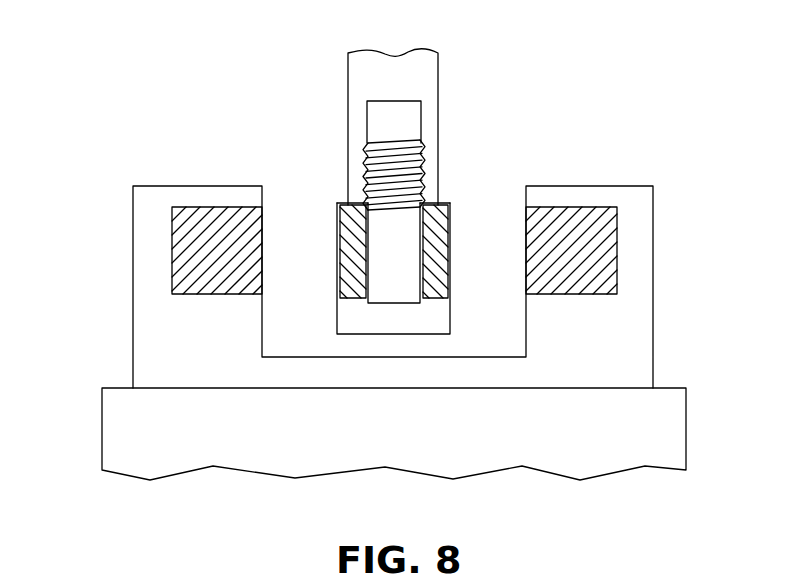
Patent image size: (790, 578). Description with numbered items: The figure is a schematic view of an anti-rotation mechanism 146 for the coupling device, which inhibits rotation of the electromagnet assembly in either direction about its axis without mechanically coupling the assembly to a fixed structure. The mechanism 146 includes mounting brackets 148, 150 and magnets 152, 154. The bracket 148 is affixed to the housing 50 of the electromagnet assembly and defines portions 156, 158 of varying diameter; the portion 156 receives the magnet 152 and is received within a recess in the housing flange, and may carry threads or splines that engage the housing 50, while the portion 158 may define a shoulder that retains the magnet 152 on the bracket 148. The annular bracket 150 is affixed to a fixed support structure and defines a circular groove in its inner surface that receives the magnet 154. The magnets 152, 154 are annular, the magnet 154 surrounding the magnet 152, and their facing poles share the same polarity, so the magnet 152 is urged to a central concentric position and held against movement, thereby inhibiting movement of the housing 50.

The housing 50 is at (400, 74).
The anti-rotation mechanism 146 is at (247, 121).
The mounting bracket 148 is at (387, 218).
The mounting bracket 150 is at (215, 323).
The magnet 152 is at (350, 261).
The magnet 154 is at (210, 247).
The portion of bracket 156 is at (397, 235).
The portion of bracket 158 is at (392, 313).